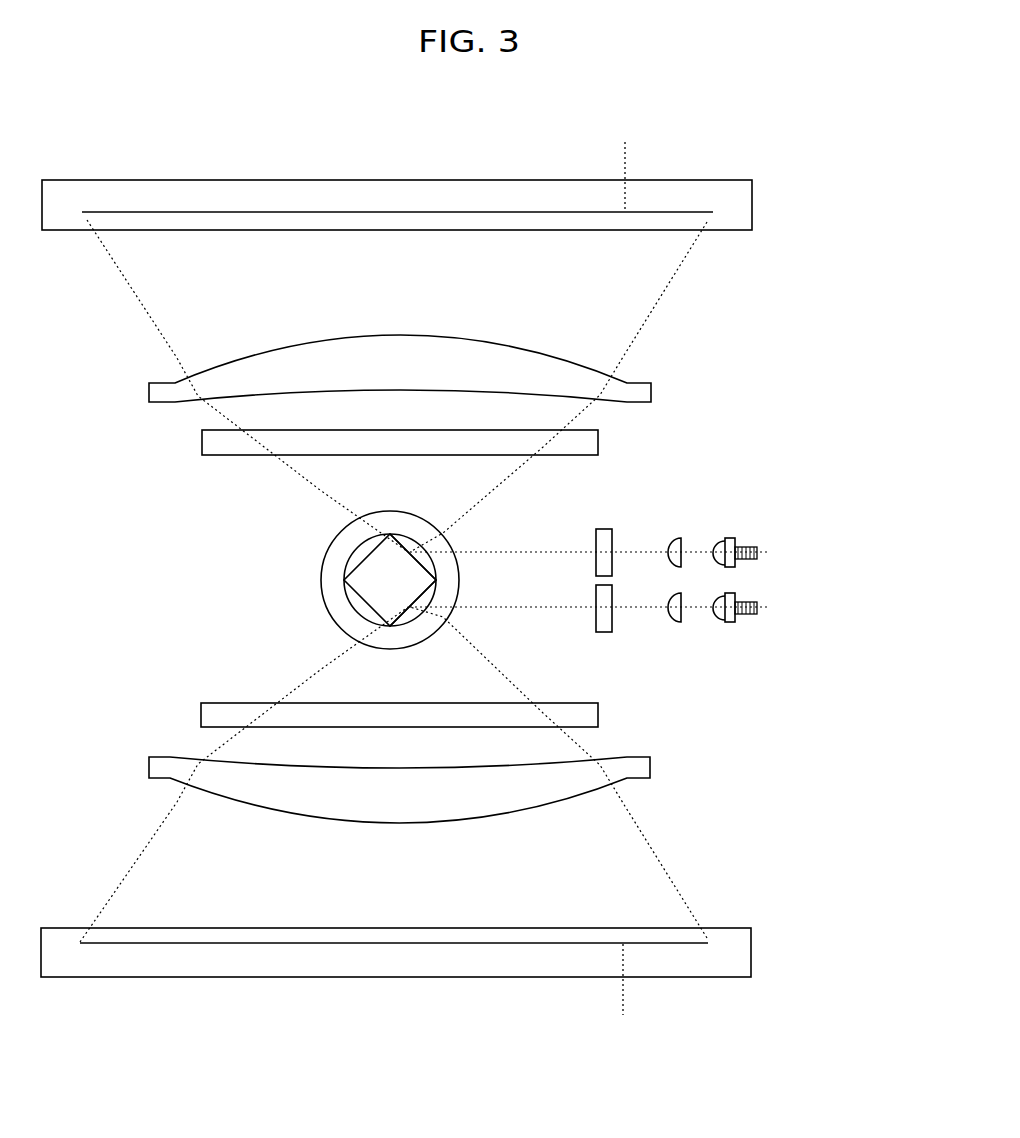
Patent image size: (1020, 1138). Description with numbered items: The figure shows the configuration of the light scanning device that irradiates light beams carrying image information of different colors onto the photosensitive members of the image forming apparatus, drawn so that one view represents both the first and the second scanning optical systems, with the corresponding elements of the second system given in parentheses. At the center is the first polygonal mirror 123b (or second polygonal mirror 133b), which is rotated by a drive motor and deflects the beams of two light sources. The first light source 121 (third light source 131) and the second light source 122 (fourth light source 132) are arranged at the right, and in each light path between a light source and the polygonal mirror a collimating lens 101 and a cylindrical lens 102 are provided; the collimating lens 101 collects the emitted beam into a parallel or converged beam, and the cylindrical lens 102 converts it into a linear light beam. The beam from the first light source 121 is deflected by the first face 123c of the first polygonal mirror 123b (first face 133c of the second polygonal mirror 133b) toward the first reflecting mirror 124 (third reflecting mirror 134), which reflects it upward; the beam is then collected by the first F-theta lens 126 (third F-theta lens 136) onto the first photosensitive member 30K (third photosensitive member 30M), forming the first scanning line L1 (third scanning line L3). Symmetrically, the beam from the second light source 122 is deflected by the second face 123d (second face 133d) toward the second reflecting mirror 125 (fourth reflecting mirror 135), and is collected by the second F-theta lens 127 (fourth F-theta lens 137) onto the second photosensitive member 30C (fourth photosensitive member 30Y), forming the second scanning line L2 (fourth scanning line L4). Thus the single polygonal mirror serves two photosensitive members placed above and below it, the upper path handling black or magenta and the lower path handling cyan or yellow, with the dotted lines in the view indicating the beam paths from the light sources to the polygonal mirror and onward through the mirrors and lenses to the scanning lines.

The first photosensitive member 30K is at (471, 200).
The third photosensitive member 30M is at (752, 195).
The second photosensitive member 30C is at (469, 964).
The fourth photosensitive member 30Y is at (751, 968).
The first scanning line L1 is at (626, 160).
The second scanning line L2 is at (625, 998).
The third scanning line L3 is at (626, 160).
The fourth scanning line L4 is at (625, 998).
The collimating lens 101 is at (676, 536).
The cylindrical lens 102 is at (606, 527).
The first light source 121 is at (765, 522).
The second light source 122 is at (765, 640).
The third light source 131 is at (728, 537).
The fourth light source 132 is at (728, 623).
The first polygonal mirror 123b is at (308, 580).
The first face of the first polygonal mirror 123c is at (487, 546).
The second face of the first polygonal mirror 123d is at (487, 611).
The second polygonal mirror 133b is at (366, 579).
The first face of the second polygonal mirror 133c is at (432, 548).
The second face of the second polygonal mirror 133d is at (432, 612).
The first reflecting mirror 124 is at (480, 443).
The second reflecting mirror 125 is at (479, 718).
The first F-theta lens 126 is at (473, 368).
The second F-theta lens 127 is at (473, 790).
The third reflecting mirror 134 is at (598, 443).
The fourth reflecting mirror 135 is at (598, 718).
The third F-theta lens 136 is at (651, 392).
The fourth F-theta lens 137 is at (650, 768).